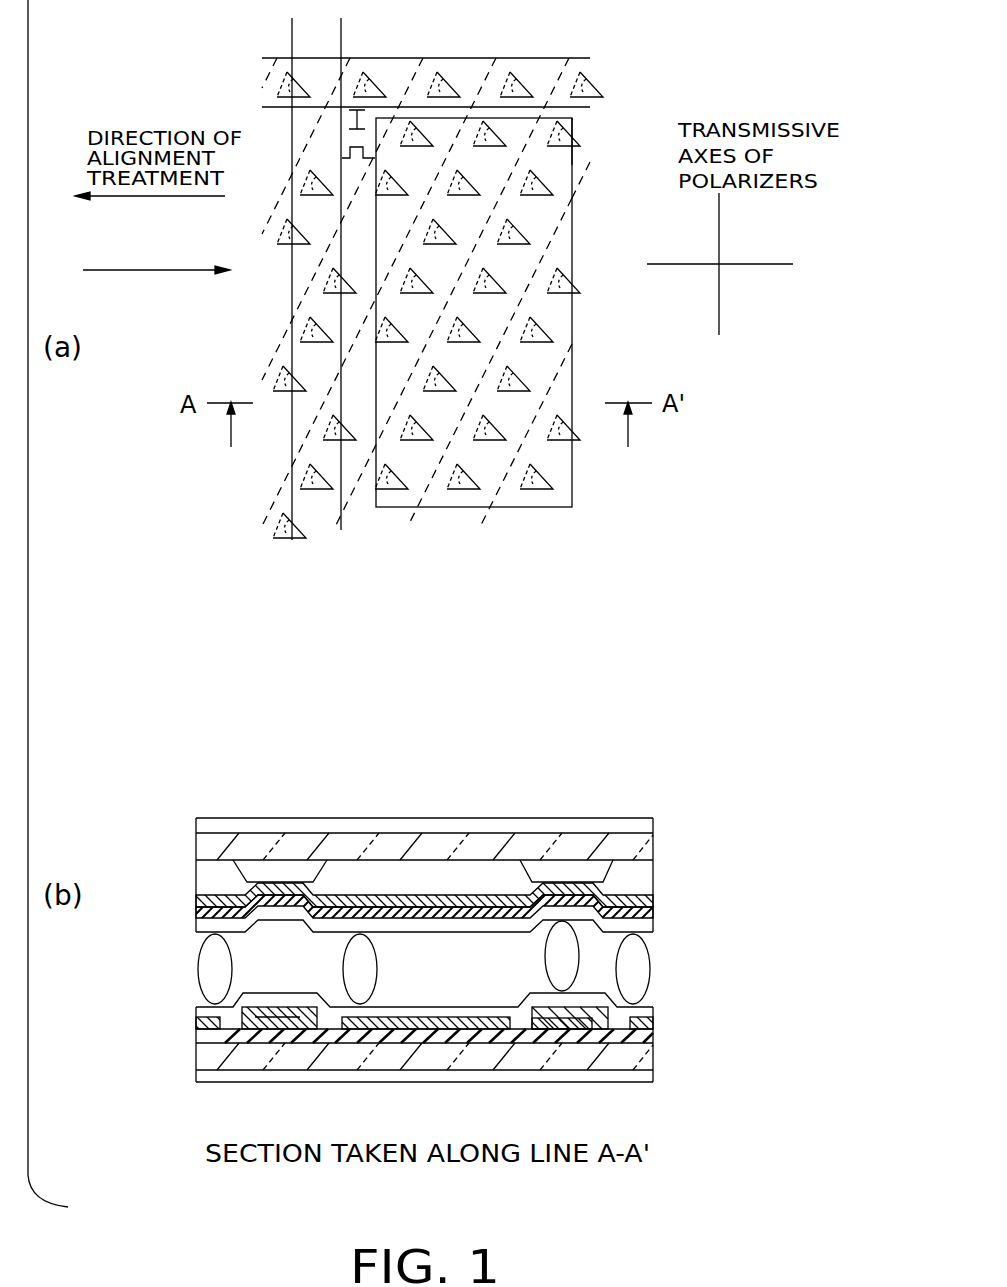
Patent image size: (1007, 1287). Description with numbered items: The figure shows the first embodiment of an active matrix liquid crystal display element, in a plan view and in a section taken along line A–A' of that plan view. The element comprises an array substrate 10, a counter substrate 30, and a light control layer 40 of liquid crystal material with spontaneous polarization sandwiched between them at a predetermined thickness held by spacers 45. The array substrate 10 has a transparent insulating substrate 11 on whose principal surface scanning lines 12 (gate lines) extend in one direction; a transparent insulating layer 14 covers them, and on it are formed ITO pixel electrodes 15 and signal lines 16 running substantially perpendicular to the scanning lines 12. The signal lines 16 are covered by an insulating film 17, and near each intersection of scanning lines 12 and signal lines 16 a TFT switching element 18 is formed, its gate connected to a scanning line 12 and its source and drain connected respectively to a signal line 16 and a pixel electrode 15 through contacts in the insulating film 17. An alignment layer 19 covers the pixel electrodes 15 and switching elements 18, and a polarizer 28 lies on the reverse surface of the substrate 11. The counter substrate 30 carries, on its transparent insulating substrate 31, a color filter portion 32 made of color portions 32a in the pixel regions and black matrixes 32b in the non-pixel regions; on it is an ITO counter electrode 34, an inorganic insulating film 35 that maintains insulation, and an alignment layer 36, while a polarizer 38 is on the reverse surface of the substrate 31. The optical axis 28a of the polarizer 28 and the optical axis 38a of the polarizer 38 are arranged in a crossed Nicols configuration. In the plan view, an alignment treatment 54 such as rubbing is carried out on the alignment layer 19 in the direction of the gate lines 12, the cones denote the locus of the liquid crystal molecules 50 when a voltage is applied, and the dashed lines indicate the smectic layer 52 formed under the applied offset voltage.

The array substrate 10 is at (728, 987).
The transparent insulating substrate 11 is at (646, 1058).
The scanning line 12 is at (545, 63).
The transparent insulating layer 14 is at (200, 1040).
The pixel electrode 15 is at (572, 325).
The signal line 16 is at (302, 34).
The insulating film 17 is at (600, 1020).
The switching element 18 is at (364, 140).
The alignment layer 19 is at (653, 1008).
The polarizer 28 is at (200, 1077).
The optical axis 28a is at (722, 222).
The counter substrate 30 is at (750, 813).
The transparent insulating substrate 31 is at (653, 851).
The color filter portion 32 is at (426, 793).
The color portion 32a is at (443, 872).
The black matrix 32b is at (566, 825).
The counter electrode 34 is at (653, 897).
The inorganic insulating film 35 is at (653, 910).
The alignment layer 36 is at (653, 928).
The polarizer 38 is at (197, 826).
The optical axis 38a is at (770, 265).
The light control layer 40 is at (397, 980).
The spacer 45 is at (210, 972).
The liquid crystal molecule 50 is at (572, 152).
The smectic layer 52 is at (558, 234).
The alignment treatment 54 is at (162, 196).